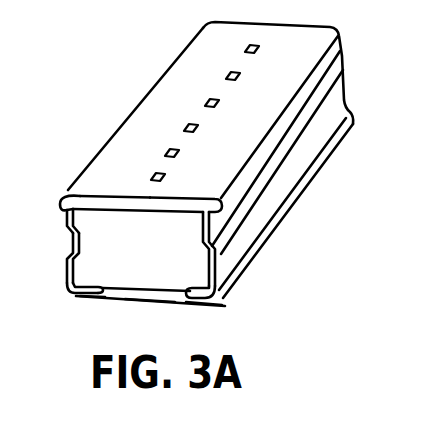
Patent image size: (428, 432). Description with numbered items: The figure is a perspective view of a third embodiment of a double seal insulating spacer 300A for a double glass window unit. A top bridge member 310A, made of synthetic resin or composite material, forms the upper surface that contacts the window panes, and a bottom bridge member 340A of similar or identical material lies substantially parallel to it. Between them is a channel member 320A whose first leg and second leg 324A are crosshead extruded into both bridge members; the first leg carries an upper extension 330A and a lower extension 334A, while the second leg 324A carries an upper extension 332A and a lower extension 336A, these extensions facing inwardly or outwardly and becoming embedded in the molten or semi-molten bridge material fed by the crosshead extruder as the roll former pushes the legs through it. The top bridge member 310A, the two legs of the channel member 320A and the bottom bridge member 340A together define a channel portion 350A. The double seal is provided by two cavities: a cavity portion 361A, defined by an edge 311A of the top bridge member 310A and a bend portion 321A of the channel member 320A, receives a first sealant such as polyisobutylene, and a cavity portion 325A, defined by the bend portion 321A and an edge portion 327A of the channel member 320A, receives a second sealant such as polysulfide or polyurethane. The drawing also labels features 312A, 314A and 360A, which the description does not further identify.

The double seal insulating spacer 300A is at (97, 134).
The top bridge member 310A is at (158, 95).
The edge of the top bridge member 311A is at (80, 177).
The top front edge 312A is at (108, 197).
The front face 314A is at (111, 213).
The channel member 320A is at (82, 270).
The bend portion of channel member 321A is at (67, 229).
The second leg 324A is at (232, 252).
The cavity portion 325A is at (66, 264).
The edge portion of channel member 327A is at (72, 298).
The upper extension 330A is at (80, 193).
The upper extension 332A is at (203, 196).
The lower extension 334A is at (90, 295).
The lower extension 336A is at (196, 302).
The bottom bridge member 340A is at (150, 302).
The channel portion 350A is at (180, 270).
The vent holes 360A is at (240, 76).
The cavity portion 361A is at (62, 204).